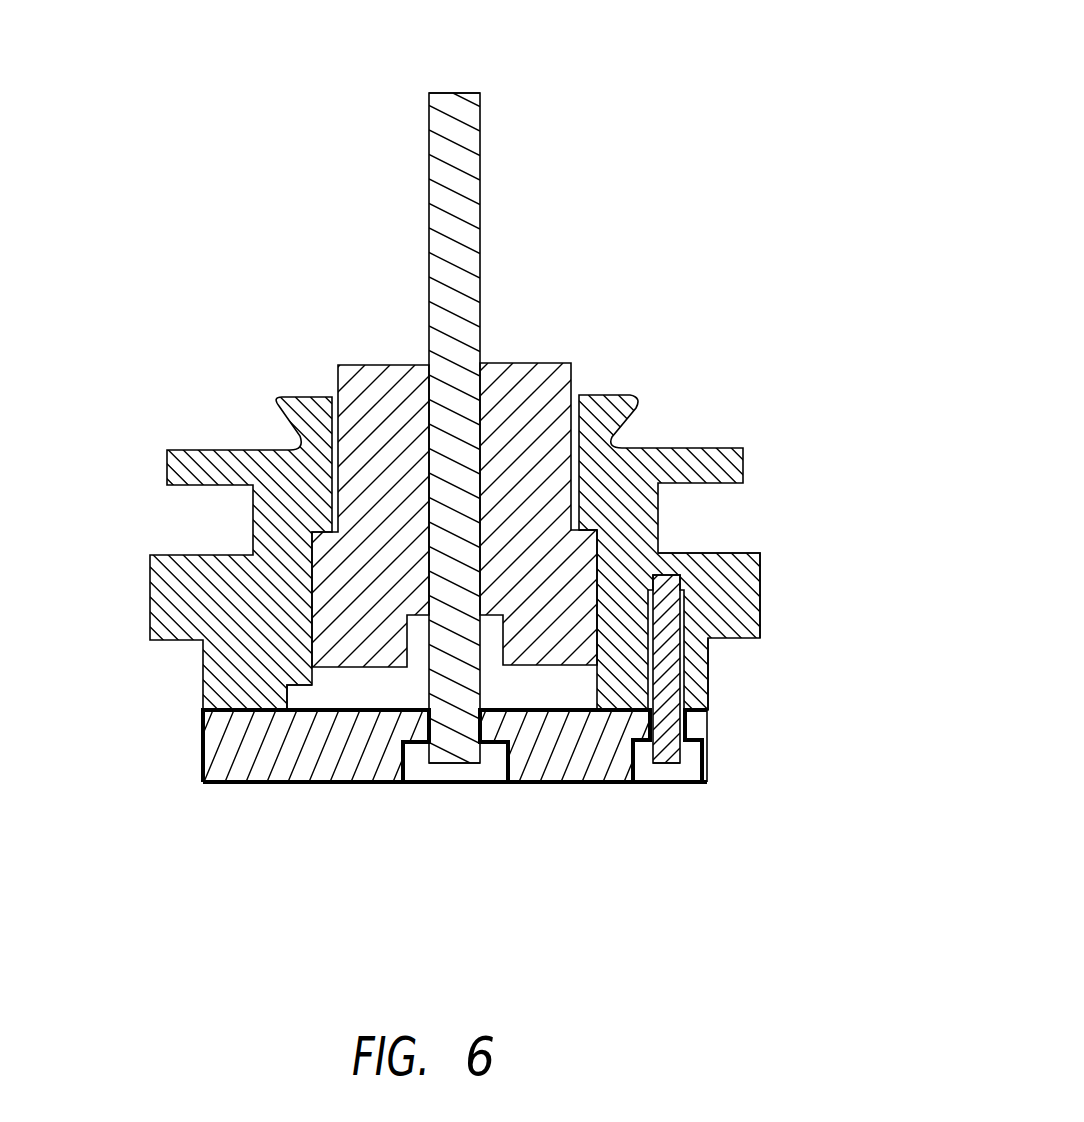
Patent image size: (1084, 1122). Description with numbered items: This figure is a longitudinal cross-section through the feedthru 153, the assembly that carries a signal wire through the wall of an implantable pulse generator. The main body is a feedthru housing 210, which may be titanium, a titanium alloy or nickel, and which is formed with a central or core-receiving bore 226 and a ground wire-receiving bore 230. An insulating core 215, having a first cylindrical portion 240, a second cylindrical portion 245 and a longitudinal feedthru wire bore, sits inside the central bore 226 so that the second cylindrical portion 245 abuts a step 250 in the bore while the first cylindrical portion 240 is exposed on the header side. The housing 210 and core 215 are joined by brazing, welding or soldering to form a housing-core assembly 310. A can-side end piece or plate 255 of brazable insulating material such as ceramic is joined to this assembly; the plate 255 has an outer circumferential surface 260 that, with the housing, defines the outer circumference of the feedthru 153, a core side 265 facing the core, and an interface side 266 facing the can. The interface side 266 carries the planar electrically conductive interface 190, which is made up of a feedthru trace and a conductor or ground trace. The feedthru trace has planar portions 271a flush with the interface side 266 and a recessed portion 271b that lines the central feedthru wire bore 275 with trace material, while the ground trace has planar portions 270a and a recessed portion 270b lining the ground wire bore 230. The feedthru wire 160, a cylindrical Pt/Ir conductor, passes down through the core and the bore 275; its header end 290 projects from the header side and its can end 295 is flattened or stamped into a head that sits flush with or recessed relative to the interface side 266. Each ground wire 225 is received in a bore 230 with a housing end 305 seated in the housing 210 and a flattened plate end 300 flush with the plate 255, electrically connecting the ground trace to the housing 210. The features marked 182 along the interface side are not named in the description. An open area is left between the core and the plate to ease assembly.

The valve assembly 153 is at (665, 148).
The feedthru wire 160 is at (429, 167).
The fluid passage 182 is at (290, 783).
The planar electrically conductive interface 190 is at (352, 818).
The feedthru housing 210 is at (264, 360).
The core 215 is at (522, 352).
The ground wire 225 is at (685, 650).
The central or core-receiving bore 226 is at (575, 410).
The ground wire-receiving bore 230 is at (692, 785).
The first cylindrical portion 240 is at (577, 375).
The second cylindrical portion 245 is at (598, 556).
The step 250 is at (580, 527).
The plate 255 is at (176, 727).
The outer circumferential surface 260 is at (200, 766).
The core side 265 is at (318, 703).
The interface side 266 is at (538, 783).
The planar portions 270a is at (220, 790).
The recessed portion 270b is at (707, 712).
The planar portions 271a is at (395, 788).
The recessed portion 271b is at (427, 710).
The feedthru wire bore 275 is at (458, 776).
The header end 290 is at (455, 92).
The can end 295 is at (432, 798).
The plate end 300 is at (673, 785).
The housing end 305 is at (663, 576).
The housing-core assembly 310 is at (383, 365).